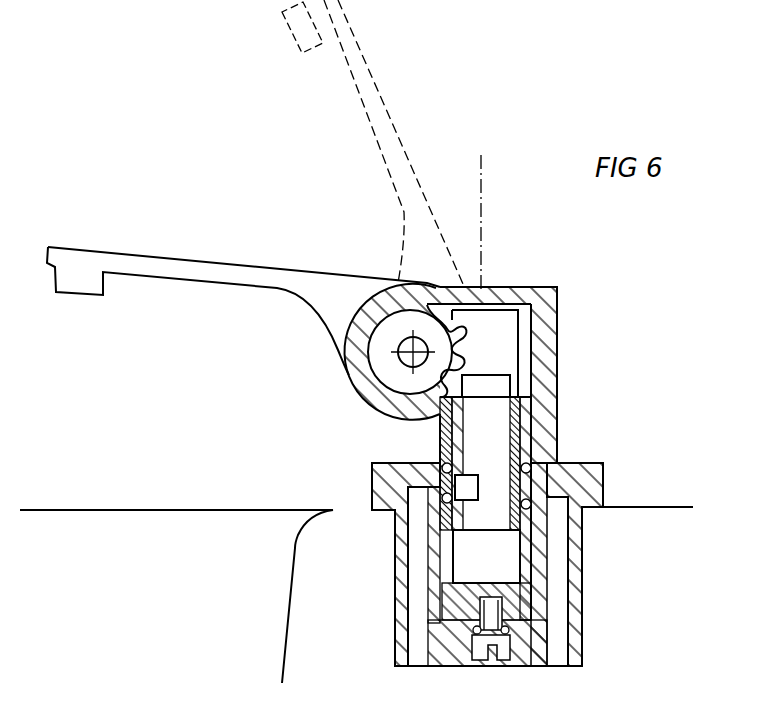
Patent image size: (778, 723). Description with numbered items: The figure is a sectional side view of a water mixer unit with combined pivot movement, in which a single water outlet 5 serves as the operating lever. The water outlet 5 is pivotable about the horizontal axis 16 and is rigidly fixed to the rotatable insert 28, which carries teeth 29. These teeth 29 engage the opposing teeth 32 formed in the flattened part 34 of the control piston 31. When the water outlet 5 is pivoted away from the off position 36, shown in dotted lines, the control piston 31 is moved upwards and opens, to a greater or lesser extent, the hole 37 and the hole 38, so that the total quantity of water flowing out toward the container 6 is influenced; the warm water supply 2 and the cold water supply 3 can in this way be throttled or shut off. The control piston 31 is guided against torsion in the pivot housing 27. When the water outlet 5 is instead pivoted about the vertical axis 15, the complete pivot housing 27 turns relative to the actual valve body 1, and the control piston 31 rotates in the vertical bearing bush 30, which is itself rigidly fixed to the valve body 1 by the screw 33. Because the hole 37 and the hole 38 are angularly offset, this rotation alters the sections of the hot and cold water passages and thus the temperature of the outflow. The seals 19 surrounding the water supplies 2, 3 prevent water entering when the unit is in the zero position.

The valve body 1 is at (575, 470).
The warm water supply 2 is at (420, 658).
The cold water supply 3 is at (555, 652).
The water outlet 5 is at (153, 263).
The container 6 is at (133, 585).
The vertical axis 15 is at (483, 162).
The horizontal axis 16 is at (355, 390).
The seals 19 is at (442, 505).
The pivot housing 27 is at (547, 340).
The rotatable insert 28 is at (407, 378).
The teeth 29 is at (434, 338).
The vertical bearing bush 30 is at (450, 545).
The control piston 31 is at (435, 416).
The opposing teeth 32 is at (485, 350).
The screw 33 is at (482, 652).
The flattened part 34 is at (500, 318).
The off position 36 is at (363, 103).
The hole 37 is at (472, 481).
The hole 38 is at (525, 488).